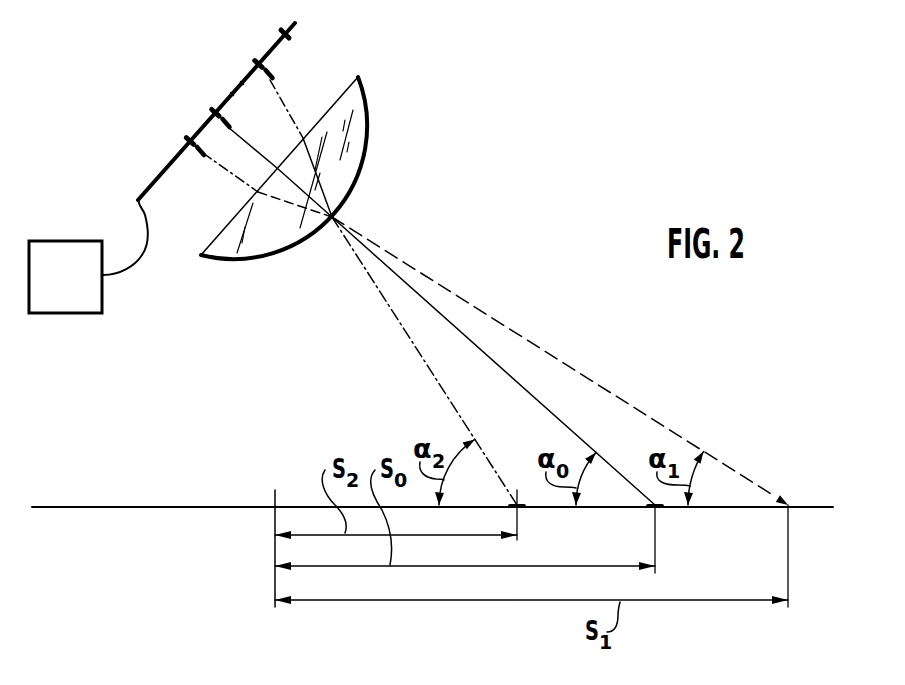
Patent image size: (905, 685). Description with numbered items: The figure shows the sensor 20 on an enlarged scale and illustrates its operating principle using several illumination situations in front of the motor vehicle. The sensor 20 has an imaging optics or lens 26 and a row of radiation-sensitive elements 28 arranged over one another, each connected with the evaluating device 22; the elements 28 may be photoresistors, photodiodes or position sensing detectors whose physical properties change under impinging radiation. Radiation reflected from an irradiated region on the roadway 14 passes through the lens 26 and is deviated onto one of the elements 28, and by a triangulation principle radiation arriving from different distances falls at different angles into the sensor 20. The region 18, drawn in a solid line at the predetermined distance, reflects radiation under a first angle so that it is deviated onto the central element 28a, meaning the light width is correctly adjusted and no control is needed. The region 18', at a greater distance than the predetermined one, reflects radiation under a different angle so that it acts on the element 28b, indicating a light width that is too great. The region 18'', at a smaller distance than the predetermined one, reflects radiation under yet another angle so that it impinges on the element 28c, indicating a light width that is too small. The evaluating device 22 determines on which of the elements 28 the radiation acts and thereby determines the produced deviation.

The surface / target plane 14 is at (96, 500).
The region 18 is at (521, 395).
The region 18' is at (586, 412).
The region 18'' is at (451, 386).
The sensor 20 is at (378, 55).
The evaluating device 22 is at (70, 310).
The lens 26 is at (360, 147).
The elements 28 is at (286, 34).
The central element 28a is at (215, 113).
The element 28b is at (190, 141).
The element 28c is at (258, 66).